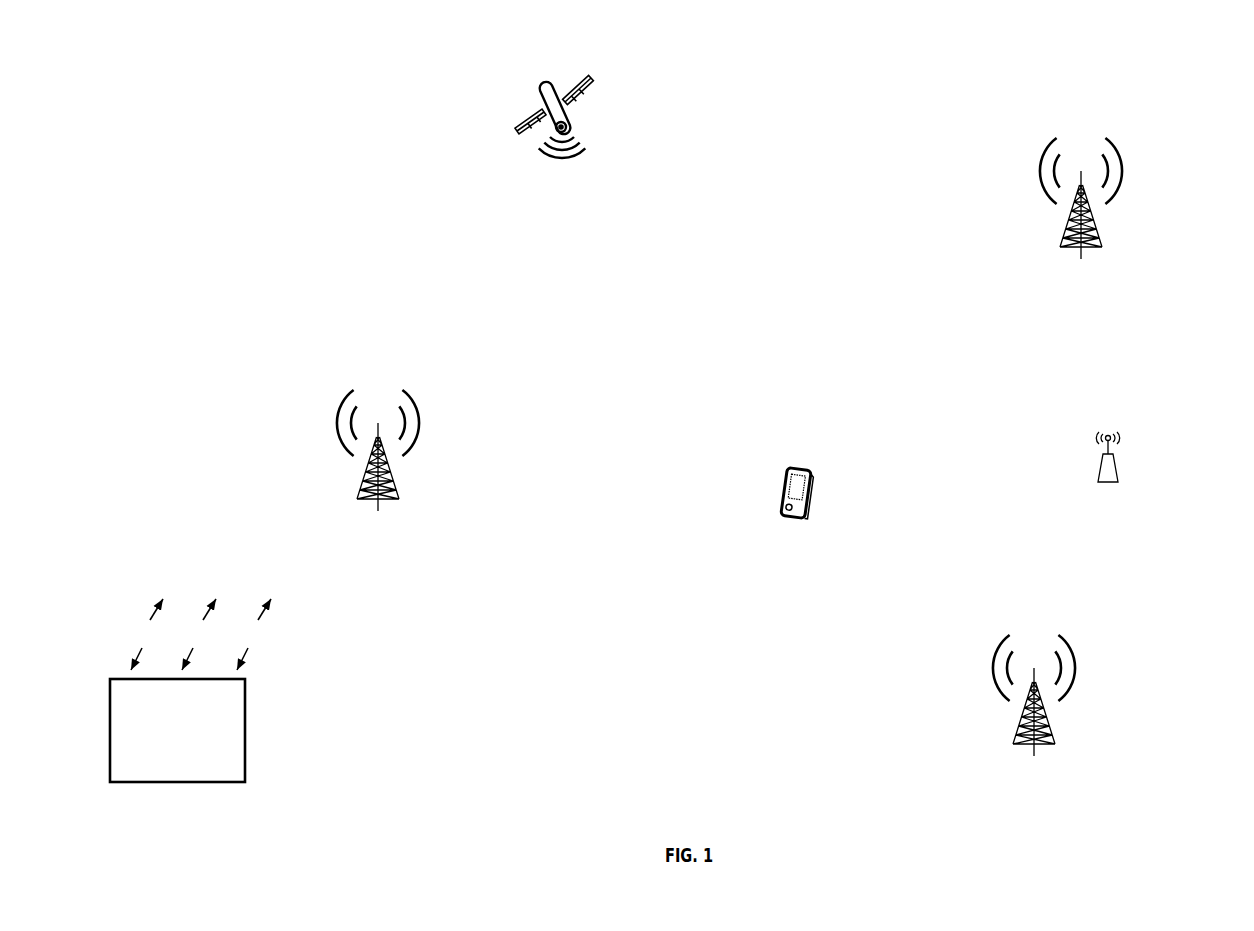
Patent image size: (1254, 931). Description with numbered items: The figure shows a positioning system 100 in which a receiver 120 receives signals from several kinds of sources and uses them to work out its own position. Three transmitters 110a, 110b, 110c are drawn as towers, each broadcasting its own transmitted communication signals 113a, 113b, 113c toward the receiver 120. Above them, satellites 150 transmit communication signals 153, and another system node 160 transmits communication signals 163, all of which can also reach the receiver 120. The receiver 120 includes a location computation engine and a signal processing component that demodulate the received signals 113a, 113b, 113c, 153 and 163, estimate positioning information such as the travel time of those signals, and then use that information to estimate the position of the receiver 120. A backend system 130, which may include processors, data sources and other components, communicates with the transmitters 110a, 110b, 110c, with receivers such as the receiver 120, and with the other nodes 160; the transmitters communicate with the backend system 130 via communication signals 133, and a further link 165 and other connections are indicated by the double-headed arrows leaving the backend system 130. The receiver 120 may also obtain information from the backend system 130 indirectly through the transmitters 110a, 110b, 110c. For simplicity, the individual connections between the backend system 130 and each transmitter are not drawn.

The positioning system 100 is at (212, 100).
The satellites 150 is at (541, 84).
The transmitted communication signals 153 is at (586, 158).
The transmitted communication signals 113a is at (420, 399).
The transmitter 110a is at (392, 477).
The transmitted communication signals 113b is at (1076, 648).
The transmitter 110b is at (1048, 720).
The transmitted communication signals 113c is at (1122, 149).
The transmitter 110c is at (1097, 222).
The receiver 120 is at (782, 489).
The other system nodes 160 is at (1098, 467).
The transmitted communication signals 163 is at (1119, 436).
The backend system 130 is at (192, 763).
The transmitted communication signals 133 is at (199, 634).
The transmitted communication signals 165 is at (146, 634).